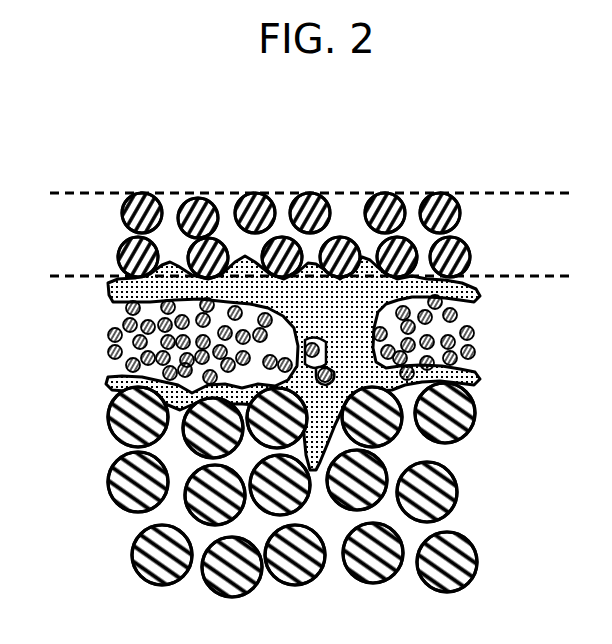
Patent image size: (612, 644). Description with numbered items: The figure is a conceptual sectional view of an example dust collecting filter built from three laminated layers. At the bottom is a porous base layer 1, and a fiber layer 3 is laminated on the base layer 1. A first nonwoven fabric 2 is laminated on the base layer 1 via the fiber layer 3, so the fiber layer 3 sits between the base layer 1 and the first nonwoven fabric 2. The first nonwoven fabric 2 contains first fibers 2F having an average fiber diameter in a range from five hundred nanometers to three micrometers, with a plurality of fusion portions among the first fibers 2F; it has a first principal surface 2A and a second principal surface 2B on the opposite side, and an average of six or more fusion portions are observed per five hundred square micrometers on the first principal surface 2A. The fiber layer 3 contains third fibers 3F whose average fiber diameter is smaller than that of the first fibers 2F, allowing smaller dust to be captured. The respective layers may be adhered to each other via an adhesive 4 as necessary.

The porous base layer 1 is at (509, 385).
The first nonwoven fabric 2 is at (509, 193).
The first principal surface 2A is at (263, 195).
The second principal surface 2B is at (488, 277).
The first fibers 2F is at (138, 210).
The fiber layer 3 is at (509, 278).
The third fibers 3F is at (108, 337).
The adhesive 4 is at (108, 402).